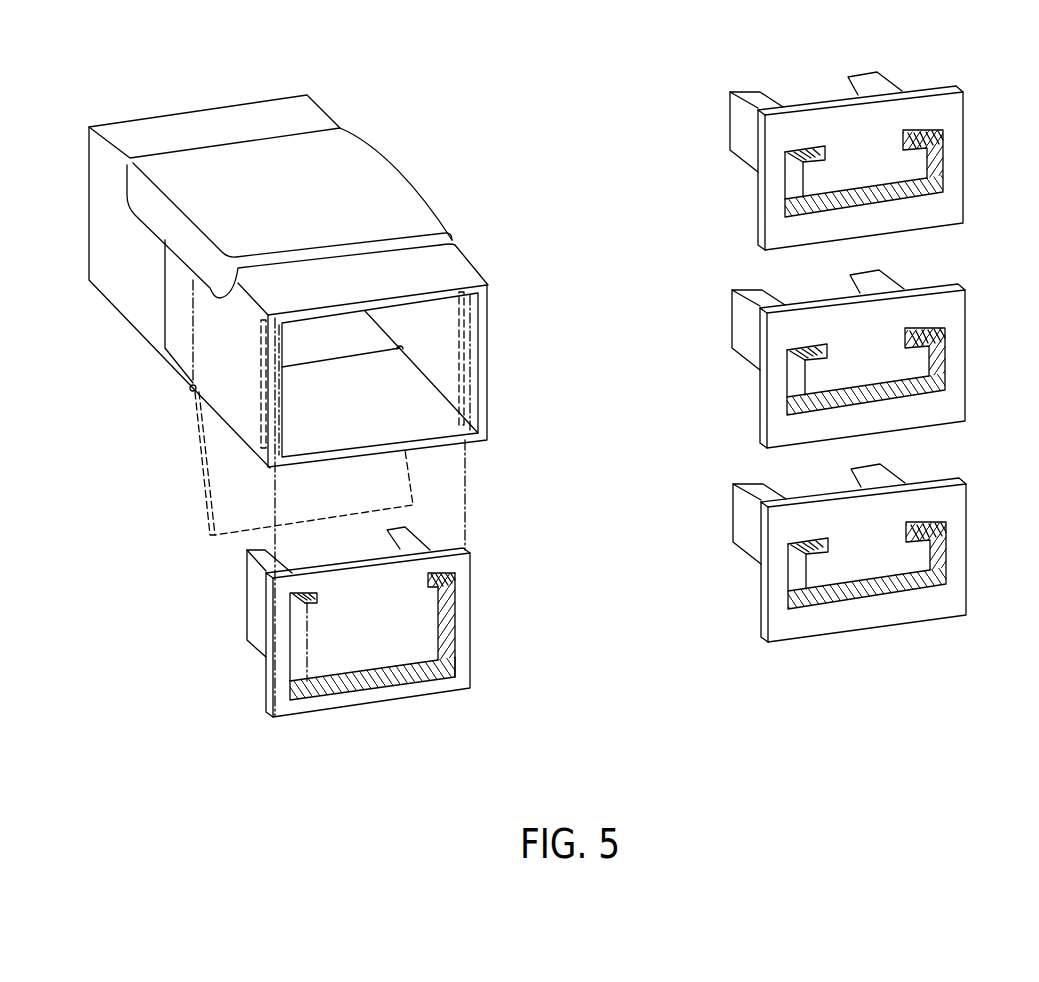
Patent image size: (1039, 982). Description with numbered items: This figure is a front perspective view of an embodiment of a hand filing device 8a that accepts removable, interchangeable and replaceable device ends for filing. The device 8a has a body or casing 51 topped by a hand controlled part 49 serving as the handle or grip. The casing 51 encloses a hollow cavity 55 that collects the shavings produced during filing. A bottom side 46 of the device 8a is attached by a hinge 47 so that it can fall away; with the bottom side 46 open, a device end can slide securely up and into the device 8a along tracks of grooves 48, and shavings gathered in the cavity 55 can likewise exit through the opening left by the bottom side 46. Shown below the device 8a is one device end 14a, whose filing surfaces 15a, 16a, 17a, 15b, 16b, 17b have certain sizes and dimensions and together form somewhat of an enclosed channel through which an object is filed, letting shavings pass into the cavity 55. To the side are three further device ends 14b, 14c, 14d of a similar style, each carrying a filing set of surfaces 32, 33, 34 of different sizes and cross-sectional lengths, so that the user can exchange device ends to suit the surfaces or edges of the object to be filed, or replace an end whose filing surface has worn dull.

The device 8a is at (285, 118).
The hand controlled part 49 is at (390, 177).
The tracks of grooves 48 is at (462, 332).
The body 51 is at (123, 292).
The hinge 47 is at (188, 390).
The bottom side 46 is at (297, 428).
The cavity 55 is at (376, 406).
The device end 14a is at (282, 713).
The filing surface 17a is at (292, 647).
The filing surface 17b is at (307, 645).
The filing surface 15b is at (438, 627).
The filing surface 15a is at (455, 640).
The filing surface 16b is at (380, 670).
The filing surface 16a is at (394, 692).
The device end 14b is at (958, 152).
The filing set of surfaces 32 is at (787, 202).
The device end 14c is at (958, 352).
The filing set of surfaces 33 is at (789, 400).
The device end 14d is at (959, 554).
The filing set of surfaces 34 is at (790, 602).